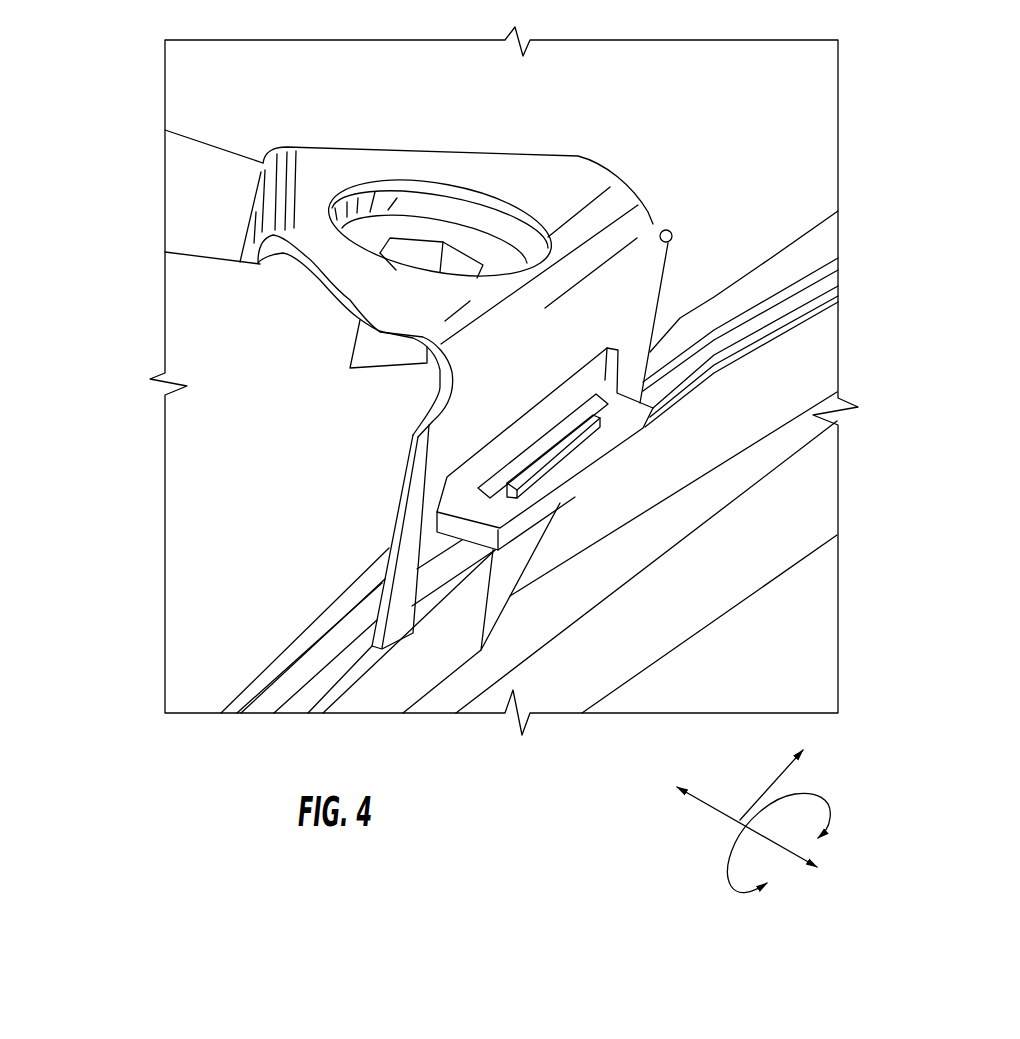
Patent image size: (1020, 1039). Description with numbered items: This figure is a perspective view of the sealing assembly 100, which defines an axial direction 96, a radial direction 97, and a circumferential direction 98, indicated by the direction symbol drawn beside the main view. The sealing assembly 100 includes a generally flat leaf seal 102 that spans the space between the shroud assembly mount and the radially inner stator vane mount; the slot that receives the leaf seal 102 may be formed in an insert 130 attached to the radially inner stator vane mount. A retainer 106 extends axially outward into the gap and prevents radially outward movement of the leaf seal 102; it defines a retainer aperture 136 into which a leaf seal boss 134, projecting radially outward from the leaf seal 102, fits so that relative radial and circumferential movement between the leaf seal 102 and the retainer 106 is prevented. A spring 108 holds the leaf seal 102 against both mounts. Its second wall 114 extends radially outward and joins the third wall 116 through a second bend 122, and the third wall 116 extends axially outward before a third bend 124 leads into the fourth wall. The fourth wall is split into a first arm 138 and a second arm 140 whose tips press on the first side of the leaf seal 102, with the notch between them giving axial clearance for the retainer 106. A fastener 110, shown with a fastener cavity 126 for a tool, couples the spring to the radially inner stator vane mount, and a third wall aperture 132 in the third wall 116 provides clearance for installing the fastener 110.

The sealing assembly 100 is at (130, 89).
The leaf seal 102 is at (460, 582).
The retainer 106 is at (623, 420).
The spring 108 is at (622, 197).
The fastener 110 is at (462, 240).
The second wall 114 is at (262, 197).
The third wall 116 is at (583, 182).
The second bend 122 is at (292, 172).
The third bend 124 is at (460, 393).
The fastener cavity 126 is at (423, 245).
The insert 130 is at (560, 628).
The third wall aperture 132 is at (492, 228).
The leaf seal boss 134 is at (580, 437).
The retainer aperture 136 is at (540, 456).
The first arm 138 is at (413, 537).
The second arm 140 is at (680, 318).
The axial direction 96 is at (705, 808).
The radial direction 97 is at (767, 790).
The circumferential direction 98 is at (730, 897).